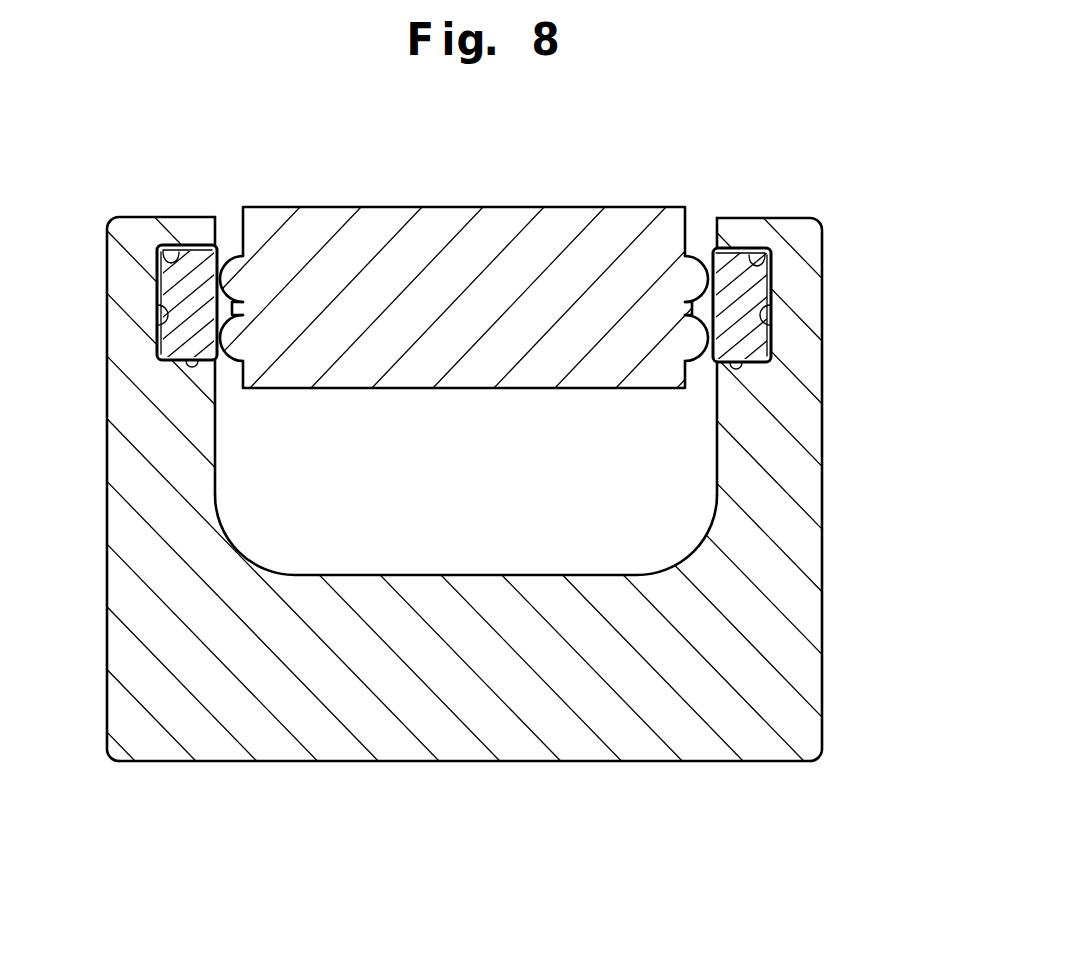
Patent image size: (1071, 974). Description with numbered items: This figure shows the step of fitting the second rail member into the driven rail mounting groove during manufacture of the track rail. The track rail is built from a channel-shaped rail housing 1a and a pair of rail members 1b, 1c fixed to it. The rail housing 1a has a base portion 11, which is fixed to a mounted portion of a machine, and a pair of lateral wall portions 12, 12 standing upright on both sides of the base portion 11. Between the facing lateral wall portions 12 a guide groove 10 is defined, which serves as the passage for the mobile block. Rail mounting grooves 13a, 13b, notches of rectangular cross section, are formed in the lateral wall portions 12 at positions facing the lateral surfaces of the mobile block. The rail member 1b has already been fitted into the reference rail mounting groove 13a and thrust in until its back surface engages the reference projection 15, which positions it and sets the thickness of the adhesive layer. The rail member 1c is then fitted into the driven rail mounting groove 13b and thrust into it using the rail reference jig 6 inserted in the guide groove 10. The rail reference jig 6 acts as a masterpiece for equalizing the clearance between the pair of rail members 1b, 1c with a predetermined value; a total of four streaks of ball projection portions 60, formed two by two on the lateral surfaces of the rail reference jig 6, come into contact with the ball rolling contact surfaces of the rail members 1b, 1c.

The rail housing 1a is at (535, 488).
The rail member 1b is at (222, 372).
The rail member 1c is at (710, 372).
The rail reference jig 6 is at (512, 207).
The guide groove 10 is at (562, 575).
The base portion 11 is at (440, 597).
The lateral wall portion 12 is at (132, 482).
The reference rail mounting groove 13a is at (131, 256).
The driven rail mounting groove 13b is at (771, 310).
The reference projection 15 is at (180, 246).
The ball projection portion 60 is at (237, 335).